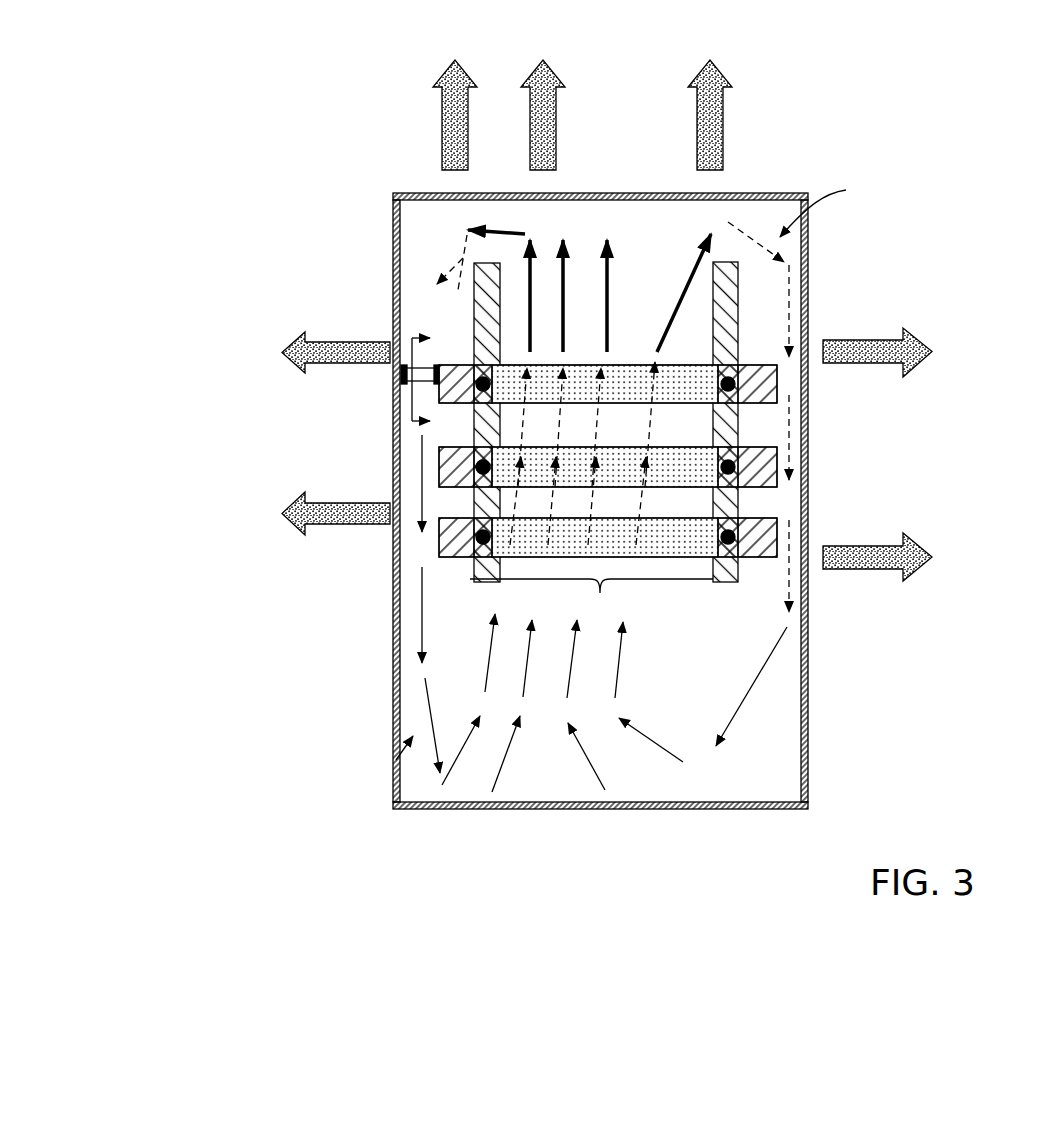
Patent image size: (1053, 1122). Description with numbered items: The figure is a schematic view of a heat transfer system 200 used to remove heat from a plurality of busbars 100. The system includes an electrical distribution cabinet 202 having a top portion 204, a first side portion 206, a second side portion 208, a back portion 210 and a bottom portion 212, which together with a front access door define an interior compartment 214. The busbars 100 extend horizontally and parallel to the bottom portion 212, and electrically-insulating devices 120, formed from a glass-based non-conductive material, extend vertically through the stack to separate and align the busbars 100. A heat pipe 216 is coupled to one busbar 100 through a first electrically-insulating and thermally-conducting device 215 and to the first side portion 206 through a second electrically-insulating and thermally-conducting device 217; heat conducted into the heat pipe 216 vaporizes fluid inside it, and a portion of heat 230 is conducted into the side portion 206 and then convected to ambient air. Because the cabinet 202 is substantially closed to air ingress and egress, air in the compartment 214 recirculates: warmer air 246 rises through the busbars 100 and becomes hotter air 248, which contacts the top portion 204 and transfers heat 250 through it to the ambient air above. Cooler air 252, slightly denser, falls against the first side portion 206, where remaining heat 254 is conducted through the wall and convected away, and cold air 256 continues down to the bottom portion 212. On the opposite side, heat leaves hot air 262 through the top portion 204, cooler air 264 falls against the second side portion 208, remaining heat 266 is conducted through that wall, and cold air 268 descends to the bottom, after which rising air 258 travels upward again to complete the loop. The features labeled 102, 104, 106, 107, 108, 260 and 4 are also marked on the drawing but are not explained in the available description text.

The heat transfer system 200 is at (257, 133).
The electrical distribution cabinet 202 is at (596, 504).
The top portion 204 is at (785, 192).
The first side portion 206 is at (396, 693).
The second side portion 208 is at (806, 730).
The back portion 210 is at (765, 784).
The bottom portion 212 is at (520, 810).
The interior compartment 214 is at (327, 772).
The first electrically-insulating and thermally-conducting device 215 is at (436, 385).
The heat pipe 216 is at (425, 380).
The second electrically-insulating and thermally-conducting device 217 is at (403, 362).
The heat 230 is at (320, 364).
The warmer air 246 is at (520, 412).
The hotter air 248 is at (537, 262).
The heat 250 is at (558, 102).
The cooler air 252 is at (476, 273).
The remaining heat 254 is at (300, 530).
The cold air 256 is at (422, 582).
The rising air 258 is at (622, 655).
The exhaust air flow out top right 260 is at (728, 92).
The hot air 262 is at (700, 262).
The cooler air 264 is at (795, 300).
The remaining heat 266 is at (935, 345).
The cold air 268 is at (770, 678).
The busbar 100 is at (759, 366).
The battery cell 102 is at (838, 525).
The battery cell housing 104 is at (765, 532).
The heat generating component 106 is at (700, 395).
The heat pipe 107 is at (737, 540).
The stack of battery modules 108 is at (689, 457).
The electrically-insulating device 120 is at (478, 568).
The section line 4 is at (431, 379).